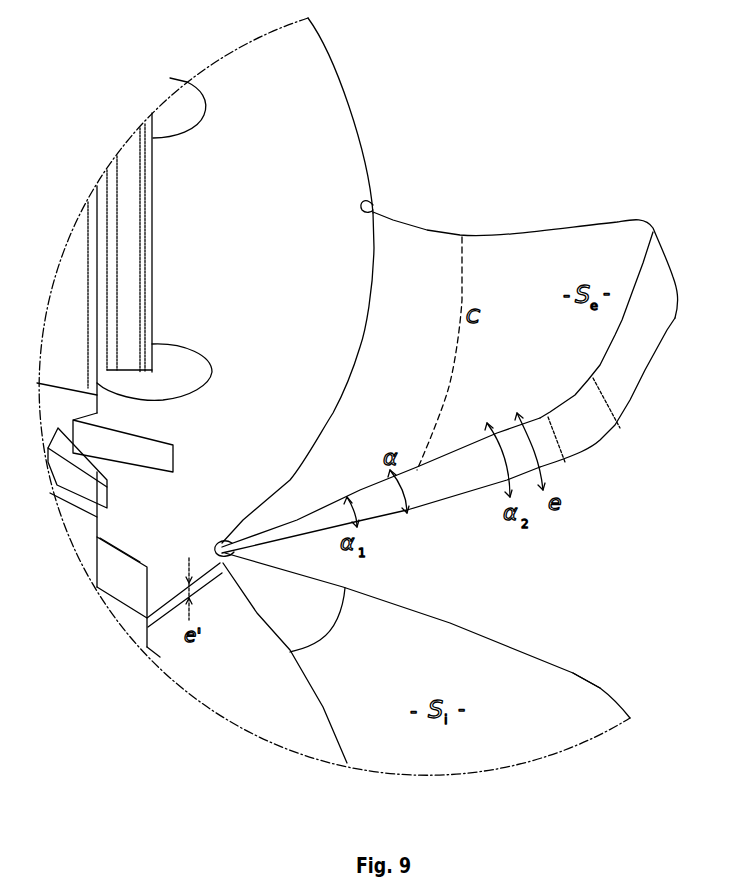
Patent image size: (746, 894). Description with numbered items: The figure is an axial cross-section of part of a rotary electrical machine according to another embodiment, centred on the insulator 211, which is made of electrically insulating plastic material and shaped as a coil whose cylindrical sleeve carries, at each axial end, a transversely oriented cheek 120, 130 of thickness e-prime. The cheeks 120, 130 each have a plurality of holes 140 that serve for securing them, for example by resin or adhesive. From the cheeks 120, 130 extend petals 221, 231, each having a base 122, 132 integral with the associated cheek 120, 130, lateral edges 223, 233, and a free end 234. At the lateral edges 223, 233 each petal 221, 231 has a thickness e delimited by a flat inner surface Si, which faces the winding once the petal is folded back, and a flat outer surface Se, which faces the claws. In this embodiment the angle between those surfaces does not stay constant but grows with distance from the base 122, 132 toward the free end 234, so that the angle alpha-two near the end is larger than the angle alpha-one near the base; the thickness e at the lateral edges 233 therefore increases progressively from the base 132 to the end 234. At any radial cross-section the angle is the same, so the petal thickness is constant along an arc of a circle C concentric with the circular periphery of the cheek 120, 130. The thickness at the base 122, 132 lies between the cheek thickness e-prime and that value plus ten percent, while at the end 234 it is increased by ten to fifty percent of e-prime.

The cheek 120 is at (213, 683).
The base 122 is at (345, 588).
The cheek 130 is at (325, 146).
The base 132 is at (373, 247).
The hole 140 is at (187, 93).
The insulator 211 is at (374, 78).
The petal 221 is at (555, 688).
The lateral edges 223 is at (480, 635).
The petal 231 is at (598, 238).
The lateral edges 233 is at (468, 234).
The free end 234 is at (645, 354).